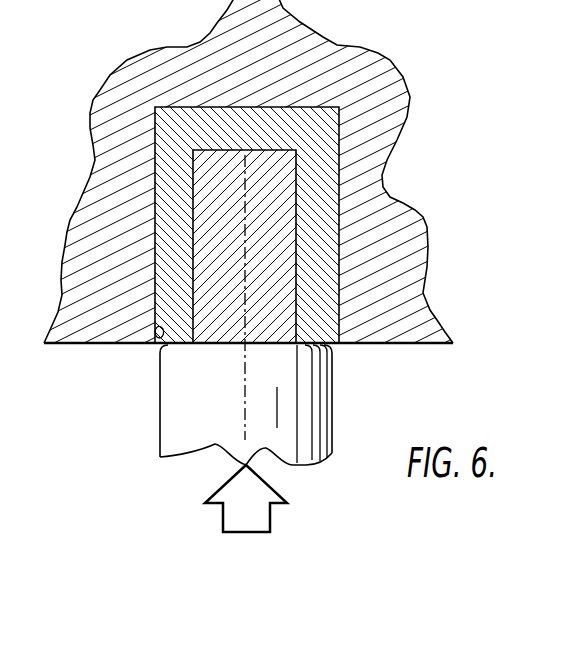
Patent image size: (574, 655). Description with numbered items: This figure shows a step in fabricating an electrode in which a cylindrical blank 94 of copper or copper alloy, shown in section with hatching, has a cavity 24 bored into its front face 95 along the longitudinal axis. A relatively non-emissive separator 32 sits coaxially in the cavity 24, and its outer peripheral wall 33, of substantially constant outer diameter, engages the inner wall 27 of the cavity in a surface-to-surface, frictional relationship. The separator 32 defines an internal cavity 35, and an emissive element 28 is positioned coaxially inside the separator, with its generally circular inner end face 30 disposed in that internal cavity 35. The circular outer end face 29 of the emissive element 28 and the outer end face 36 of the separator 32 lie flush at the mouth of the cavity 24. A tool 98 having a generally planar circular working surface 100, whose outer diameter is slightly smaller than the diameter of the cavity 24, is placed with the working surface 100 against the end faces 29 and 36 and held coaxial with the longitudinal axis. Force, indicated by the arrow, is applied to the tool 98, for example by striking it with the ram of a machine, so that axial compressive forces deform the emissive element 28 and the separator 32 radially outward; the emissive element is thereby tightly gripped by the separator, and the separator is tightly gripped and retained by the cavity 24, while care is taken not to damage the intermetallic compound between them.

The cavity 24 is at (162, 342).
The inner wall 27 is at (337, 214).
The emissive element 28 is at (217, 203).
The outer end face 29 is at (218, 343).
The inner end face 30 is at (212, 150).
The separator 32 is at (163, 219).
The outer peripheral wall 33 is at (163, 313).
The internal cavity 35 is at (297, 185).
The outer end face 36 is at (309, 352).
The cylindrical blank 94 is at (393, 80).
The front face 95 is at (380, 343).
The tool 98 is at (293, 383).
The working surface 100 is at (280, 310).